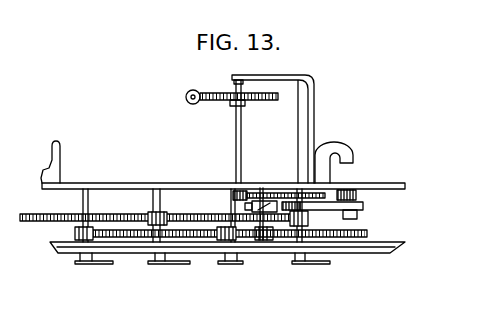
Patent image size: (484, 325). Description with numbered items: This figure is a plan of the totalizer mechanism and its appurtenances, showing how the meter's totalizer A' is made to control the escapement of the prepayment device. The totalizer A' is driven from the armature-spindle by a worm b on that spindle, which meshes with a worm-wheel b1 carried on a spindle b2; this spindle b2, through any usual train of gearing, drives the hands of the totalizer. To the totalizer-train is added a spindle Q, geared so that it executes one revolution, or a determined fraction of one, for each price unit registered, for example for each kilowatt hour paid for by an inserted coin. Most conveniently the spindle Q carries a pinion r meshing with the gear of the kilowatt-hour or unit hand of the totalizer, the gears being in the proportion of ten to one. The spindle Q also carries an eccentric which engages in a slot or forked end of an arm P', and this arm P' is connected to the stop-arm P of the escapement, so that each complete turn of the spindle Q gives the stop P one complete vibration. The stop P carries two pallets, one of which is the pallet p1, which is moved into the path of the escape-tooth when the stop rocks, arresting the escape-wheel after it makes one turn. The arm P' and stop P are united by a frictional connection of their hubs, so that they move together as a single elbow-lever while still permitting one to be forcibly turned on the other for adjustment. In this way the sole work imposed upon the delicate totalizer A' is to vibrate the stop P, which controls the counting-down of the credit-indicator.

The worm b is at (223, 100).
The worm-wheel b1 is at (257, 104).
The spindle b2 is at (236, 138).
The rack g is at (270, 188).
The spindle Q is at (261, 241).
The pinion r is at (257, 241).
The arm P' is at (221, 252).
The stop P is at (349, 171).
The pallet p1 is at (366, 233).
The totalizer A' is at (223, 181).